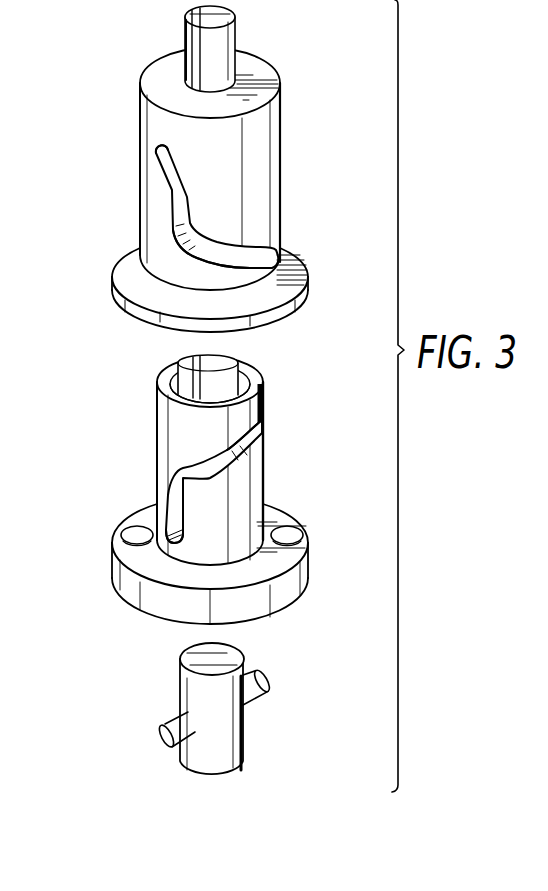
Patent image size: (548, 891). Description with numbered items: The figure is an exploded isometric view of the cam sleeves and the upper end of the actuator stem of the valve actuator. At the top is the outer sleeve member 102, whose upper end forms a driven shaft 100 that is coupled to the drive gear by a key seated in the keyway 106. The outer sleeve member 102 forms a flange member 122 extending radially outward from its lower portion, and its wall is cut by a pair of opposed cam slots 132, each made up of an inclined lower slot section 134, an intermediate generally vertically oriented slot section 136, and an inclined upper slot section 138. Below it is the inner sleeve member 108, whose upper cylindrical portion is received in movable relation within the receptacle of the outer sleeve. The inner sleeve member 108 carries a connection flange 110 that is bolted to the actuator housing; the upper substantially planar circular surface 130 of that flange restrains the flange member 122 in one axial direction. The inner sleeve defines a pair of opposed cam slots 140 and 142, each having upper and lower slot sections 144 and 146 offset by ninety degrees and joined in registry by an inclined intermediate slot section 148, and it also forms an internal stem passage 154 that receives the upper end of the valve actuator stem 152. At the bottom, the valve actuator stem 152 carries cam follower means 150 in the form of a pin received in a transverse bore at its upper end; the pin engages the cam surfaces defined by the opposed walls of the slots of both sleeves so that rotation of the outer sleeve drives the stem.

The driven shaft 100 is at (227, 43).
The outer sleeve member 102 is at (152, 118).
The keyway 106 is at (183, 38).
The inner sleeve member 108 is at (253, 483).
The connection flange 110 is at (137, 588).
The flange member 122 is at (130, 303).
The upper substantially planar circular surface 130 is at (270, 568).
The cam slots 132 is at (173, 238).
The inclined lower slot section 134 is at (226, 268).
The intermediate generally vertically oriented slot section 136 is at (177, 218).
The inclined upper slot section 138 is at (157, 160).
The cam slot 140 is at (175, 365).
The cam slot 142 is at (263, 392).
The upper slot section 144 is at (260, 423).
The lower slot section 146 is at (170, 517).
The inclined intermediate slot section 148 is at (220, 458).
The cam follower means 150 is at (165, 718).
The valve actuator stem 152 is at (245, 745).
The internal stem passage 154 is at (232, 380).